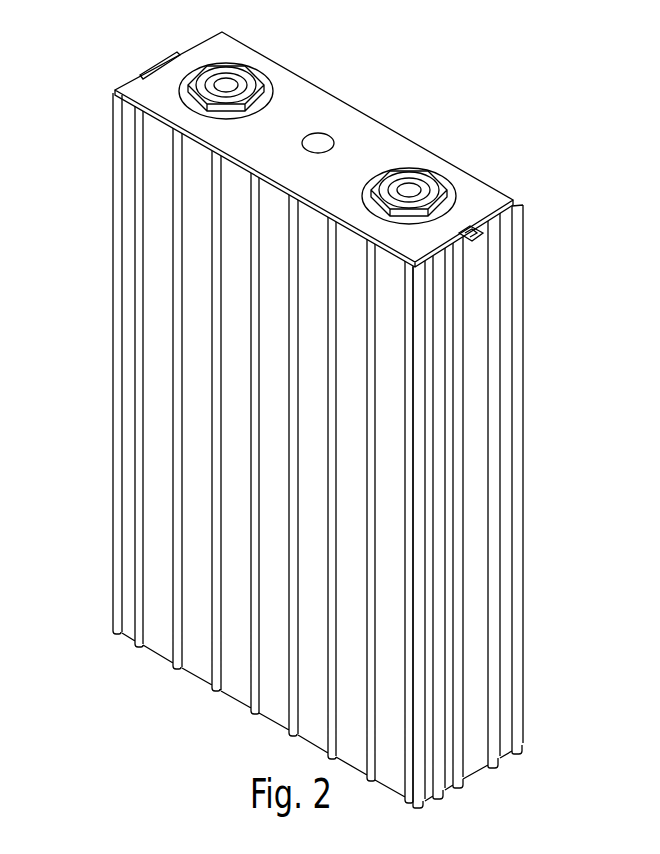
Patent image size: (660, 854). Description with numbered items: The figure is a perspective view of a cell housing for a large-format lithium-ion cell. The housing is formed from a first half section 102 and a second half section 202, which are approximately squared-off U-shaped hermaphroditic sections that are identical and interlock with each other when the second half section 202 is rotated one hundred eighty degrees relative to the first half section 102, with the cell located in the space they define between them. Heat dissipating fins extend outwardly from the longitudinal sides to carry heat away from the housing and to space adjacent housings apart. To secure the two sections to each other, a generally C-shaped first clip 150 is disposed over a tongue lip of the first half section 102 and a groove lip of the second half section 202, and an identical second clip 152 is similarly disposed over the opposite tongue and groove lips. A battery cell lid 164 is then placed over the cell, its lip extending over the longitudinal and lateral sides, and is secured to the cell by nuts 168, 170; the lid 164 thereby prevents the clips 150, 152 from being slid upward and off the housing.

The first half section 102 is at (114, 283).
The first clip 150 is at (482, 397).
The second clip 152 is at (162, 60).
The battery cell lid 164 is at (477, 187).
The nut 168 is at (428, 172).
The nut 170 is at (243, 76).
The second half section 202 is at (512, 512).